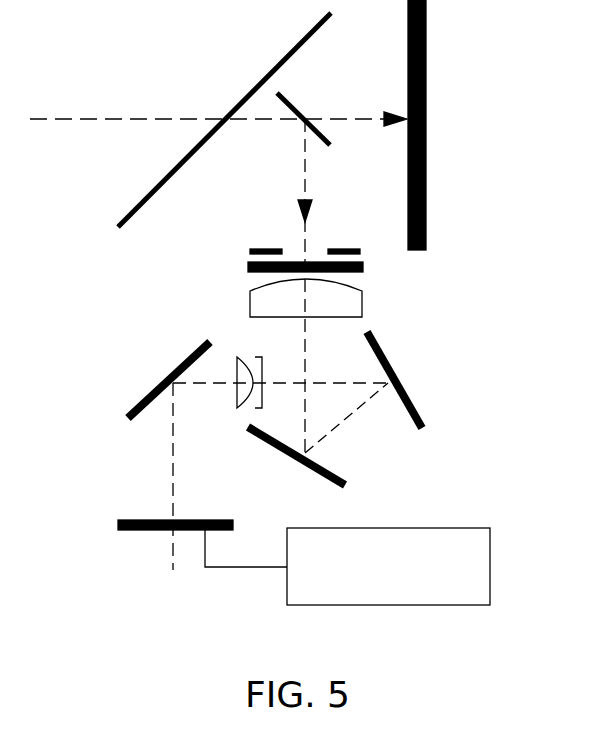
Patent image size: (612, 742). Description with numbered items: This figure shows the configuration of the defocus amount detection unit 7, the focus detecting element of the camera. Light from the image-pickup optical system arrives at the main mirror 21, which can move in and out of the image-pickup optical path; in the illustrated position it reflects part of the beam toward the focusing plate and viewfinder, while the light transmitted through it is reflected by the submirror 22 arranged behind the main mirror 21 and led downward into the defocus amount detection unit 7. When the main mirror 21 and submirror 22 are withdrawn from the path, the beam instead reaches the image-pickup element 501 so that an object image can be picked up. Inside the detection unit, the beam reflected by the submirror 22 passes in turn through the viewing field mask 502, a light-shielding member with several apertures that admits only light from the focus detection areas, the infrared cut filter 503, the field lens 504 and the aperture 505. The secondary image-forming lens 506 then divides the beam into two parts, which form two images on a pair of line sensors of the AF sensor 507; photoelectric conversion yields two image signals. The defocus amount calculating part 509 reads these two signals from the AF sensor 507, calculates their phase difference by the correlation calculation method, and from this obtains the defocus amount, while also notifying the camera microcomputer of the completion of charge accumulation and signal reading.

The main mirror 21 is at (298, 43).
The submirror 22 is at (333, 143).
The image-pickup element 501 is at (426, 50).
The viewing field mask 502 is at (258, 248).
The infrared cut filter 503 is at (363, 266).
The field lens 504 is at (362, 305).
The aperture 505 is at (259, 356).
The secondary image-forming lens 506 is at (236, 408).
The AF sensor 507 is at (116, 518).
The defocus amount calculating part 509 is at (490, 540).
The defocus amount detection unit 7 is at (447, 370).